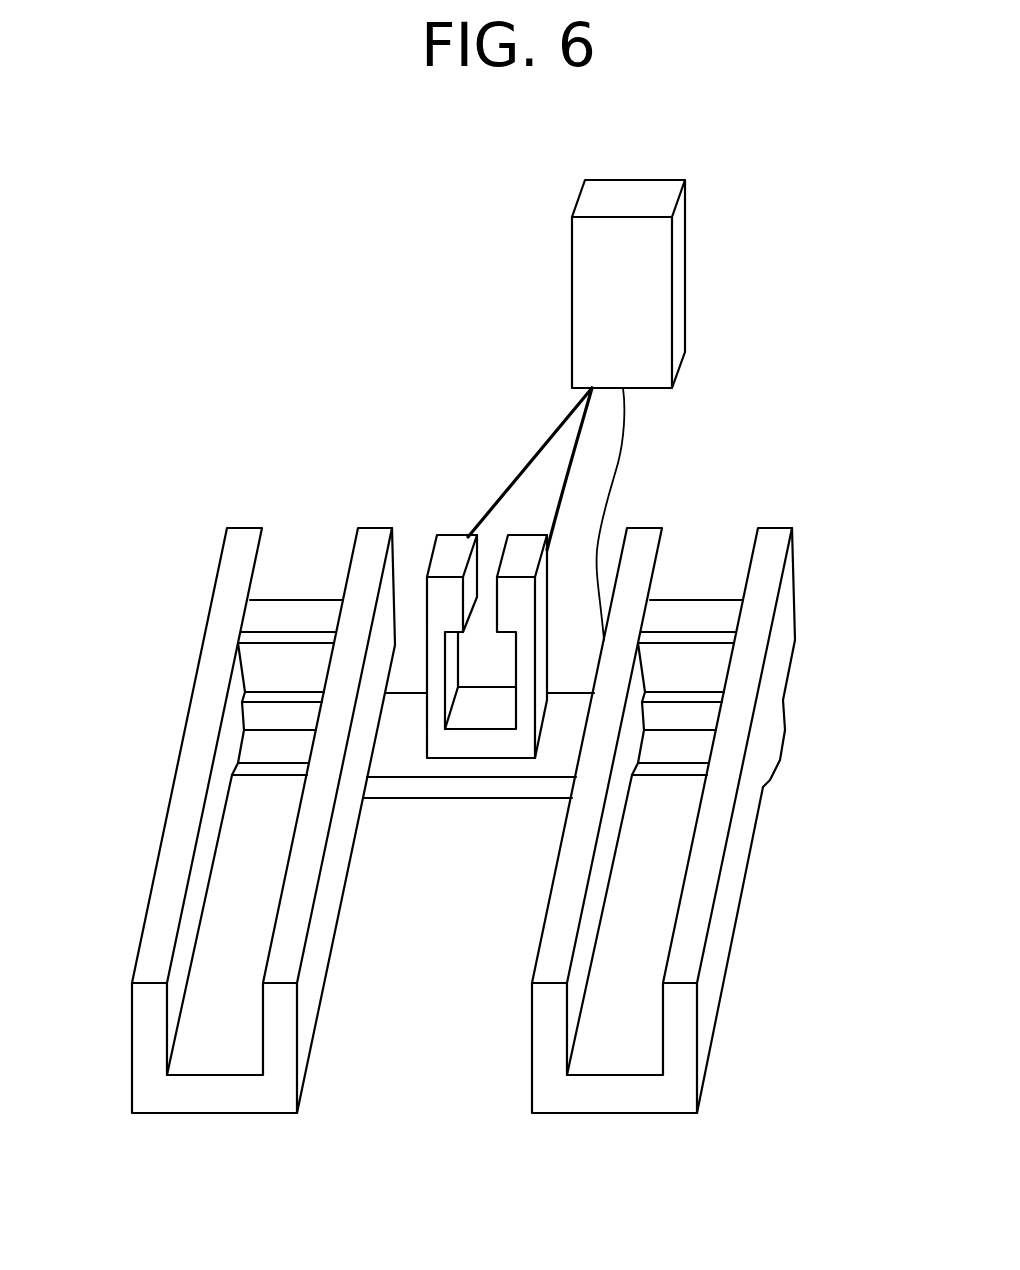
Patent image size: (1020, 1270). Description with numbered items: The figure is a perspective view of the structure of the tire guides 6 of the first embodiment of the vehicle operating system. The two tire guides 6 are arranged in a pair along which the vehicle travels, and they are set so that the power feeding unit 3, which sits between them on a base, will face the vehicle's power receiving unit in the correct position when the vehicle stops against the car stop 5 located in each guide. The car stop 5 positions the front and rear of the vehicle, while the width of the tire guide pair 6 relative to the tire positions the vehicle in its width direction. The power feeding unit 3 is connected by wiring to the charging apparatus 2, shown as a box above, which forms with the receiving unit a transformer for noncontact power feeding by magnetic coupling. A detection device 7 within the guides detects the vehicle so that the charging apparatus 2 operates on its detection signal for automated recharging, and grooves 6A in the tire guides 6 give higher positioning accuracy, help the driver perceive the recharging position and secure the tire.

The charging apparatus 2 is at (655, 270).
The power feeding unit 3 is at (450, 545).
The car stop 5 is at (300, 618).
The tire guides 6 is at (293, 917).
The grooves 6A is at (260, 745).
The detection device 7 is at (270, 670).